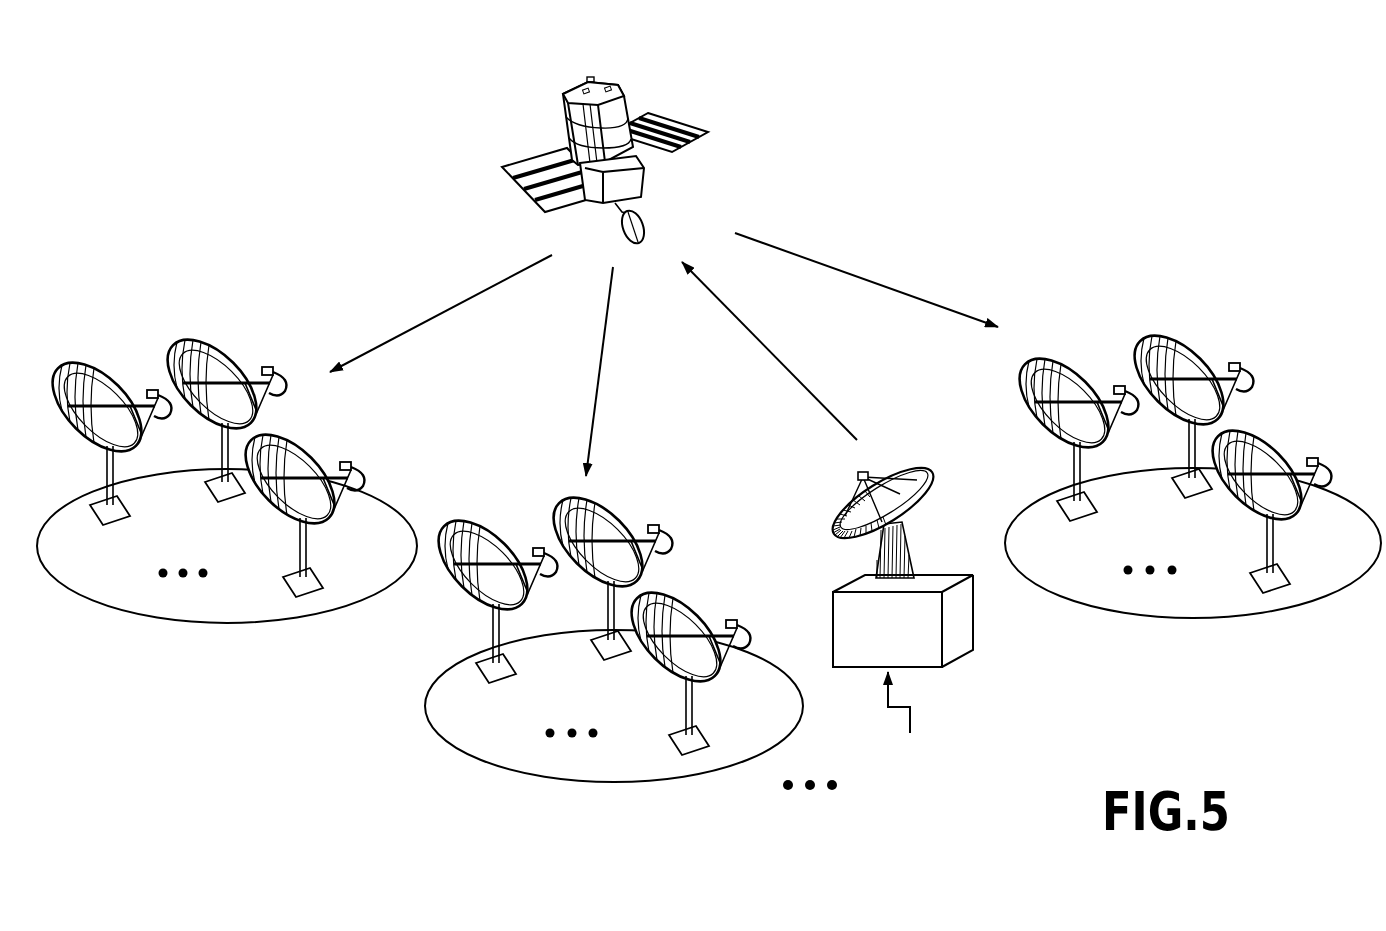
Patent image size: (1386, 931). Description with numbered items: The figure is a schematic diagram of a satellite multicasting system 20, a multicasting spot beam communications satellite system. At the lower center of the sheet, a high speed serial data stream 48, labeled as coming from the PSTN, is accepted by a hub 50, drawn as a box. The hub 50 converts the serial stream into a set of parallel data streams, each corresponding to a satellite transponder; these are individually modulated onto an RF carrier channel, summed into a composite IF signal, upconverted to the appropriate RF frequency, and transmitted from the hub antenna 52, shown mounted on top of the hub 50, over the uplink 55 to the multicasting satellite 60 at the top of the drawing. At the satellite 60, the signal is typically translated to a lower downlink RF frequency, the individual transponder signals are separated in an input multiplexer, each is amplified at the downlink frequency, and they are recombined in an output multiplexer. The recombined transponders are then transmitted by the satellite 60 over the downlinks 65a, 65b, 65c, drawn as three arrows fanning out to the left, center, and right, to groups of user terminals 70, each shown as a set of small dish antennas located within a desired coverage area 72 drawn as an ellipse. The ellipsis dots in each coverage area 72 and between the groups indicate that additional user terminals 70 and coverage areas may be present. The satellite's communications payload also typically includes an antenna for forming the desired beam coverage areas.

The satellite multicasting system 20 is at (1134, 120).
The high speed serial data stream 48 is at (905, 707).
The hub 50 is at (947, 577).
The hub antenna 52 is at (927, 463).
The uplink 55 is at (742, 328).
The multicasting satellite 60 is at (590, 76).
The downlink 65a is at (465, 297).
The downlink 65b is at (606, 327).
The downlink 65c is at (828, 264).
The user terminals 70 is at (177, 337).
The coverage area 72 is at (390, 530).